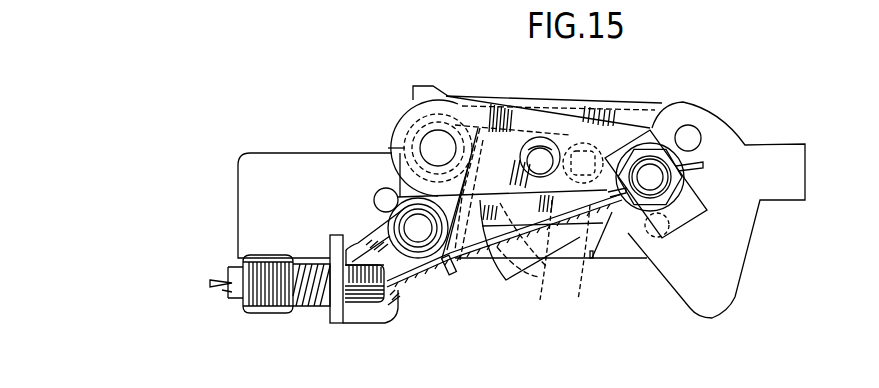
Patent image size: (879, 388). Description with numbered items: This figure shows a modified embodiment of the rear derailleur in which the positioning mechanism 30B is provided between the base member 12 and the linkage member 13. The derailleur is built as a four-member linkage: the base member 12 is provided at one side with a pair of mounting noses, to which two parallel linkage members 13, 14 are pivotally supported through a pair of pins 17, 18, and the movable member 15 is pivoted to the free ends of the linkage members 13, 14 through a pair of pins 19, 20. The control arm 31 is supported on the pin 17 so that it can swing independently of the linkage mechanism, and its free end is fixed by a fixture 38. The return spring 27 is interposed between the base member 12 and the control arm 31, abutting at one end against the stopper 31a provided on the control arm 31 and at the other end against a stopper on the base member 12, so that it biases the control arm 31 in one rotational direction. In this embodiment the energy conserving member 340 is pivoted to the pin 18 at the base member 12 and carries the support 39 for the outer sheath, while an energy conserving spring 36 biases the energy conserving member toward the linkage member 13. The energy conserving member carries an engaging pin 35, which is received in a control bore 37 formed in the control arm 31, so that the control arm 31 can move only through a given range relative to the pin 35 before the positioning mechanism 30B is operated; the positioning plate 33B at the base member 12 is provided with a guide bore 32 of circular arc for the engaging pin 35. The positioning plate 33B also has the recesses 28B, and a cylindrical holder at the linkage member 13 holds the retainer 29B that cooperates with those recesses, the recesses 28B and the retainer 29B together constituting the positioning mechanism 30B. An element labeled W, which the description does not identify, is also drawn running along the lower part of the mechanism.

The base member 12 is at (322, 157).
The linkage member 13 is at (628, 101).
The linkage member 14 is at (603, 260).
The movable member 15 is at (727, 137).
The pin 17 is at (452, 137).
The pin 18 is at (418, 245).
The pin 19 is at (695, 133).
The pin 20 is at (660, 237).
The return spring 27 is at (415, 108).
The recesses 28B is at (543, 262).
The retainer 29B is at (583, 262).
The positioning mechanism 30B is at (590, 342).
The control arm 31 is at (585, 123).
The stopper 31a is at (428, 87).
The guide bore 32 is at (480, 262).
The positioning plate 33B is at (495, 270).
The energy conserving member 340 is at (362, 323).
The engaging pin 35 is at (549, 140).
The energy conserving spring 36 is at (352, 240).
The control bore 37 is at (531, 137).
The fixture 38 is at (652, 160).
The support 39 is at (272, 313).
The wire W is at (392, 303).